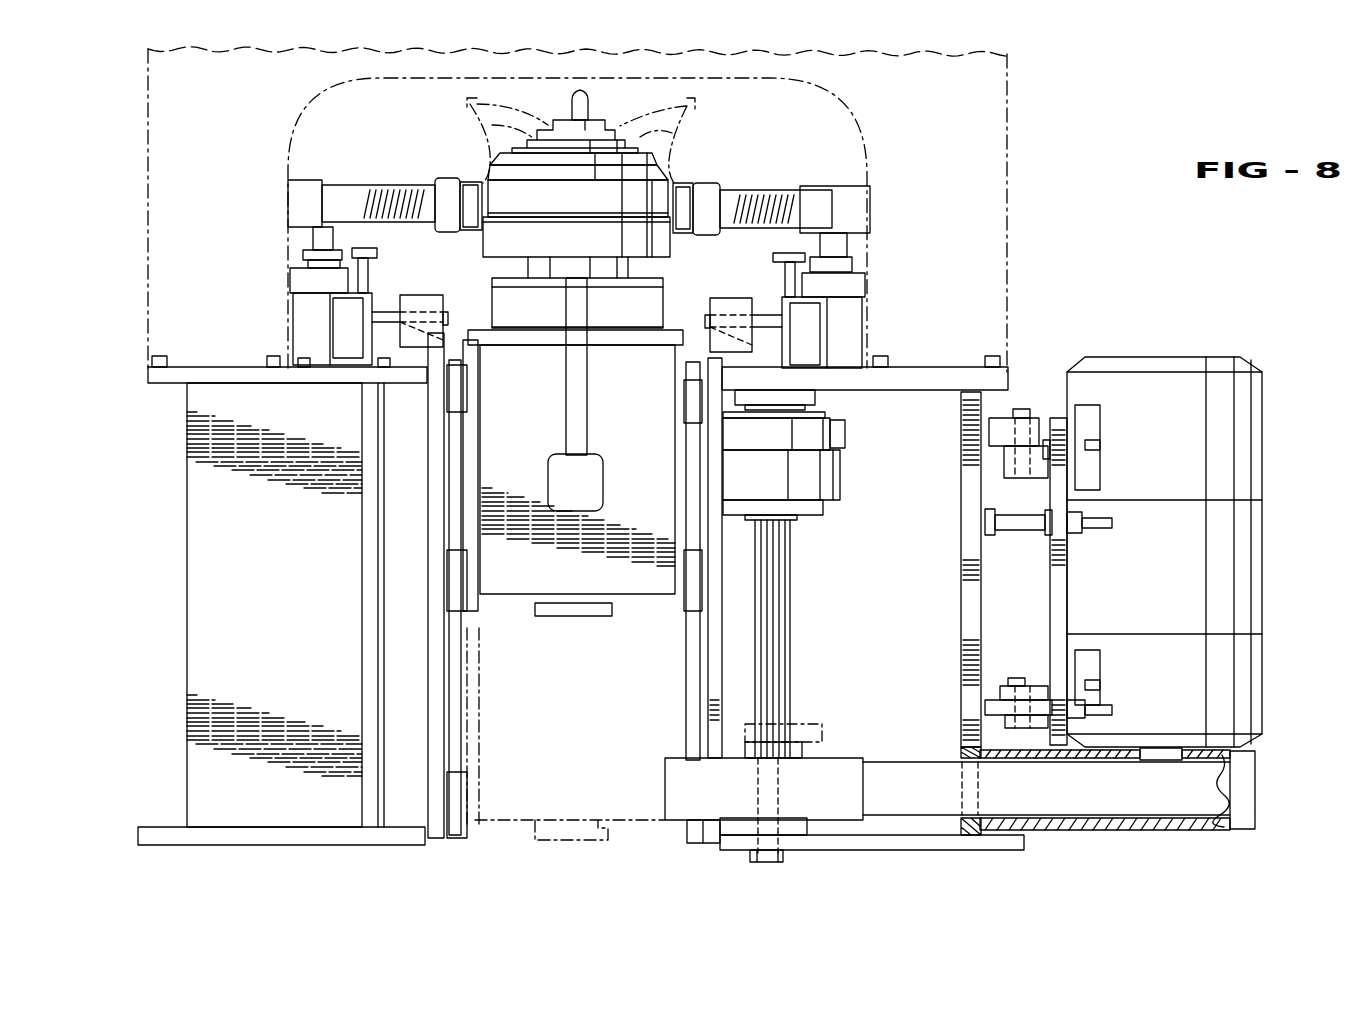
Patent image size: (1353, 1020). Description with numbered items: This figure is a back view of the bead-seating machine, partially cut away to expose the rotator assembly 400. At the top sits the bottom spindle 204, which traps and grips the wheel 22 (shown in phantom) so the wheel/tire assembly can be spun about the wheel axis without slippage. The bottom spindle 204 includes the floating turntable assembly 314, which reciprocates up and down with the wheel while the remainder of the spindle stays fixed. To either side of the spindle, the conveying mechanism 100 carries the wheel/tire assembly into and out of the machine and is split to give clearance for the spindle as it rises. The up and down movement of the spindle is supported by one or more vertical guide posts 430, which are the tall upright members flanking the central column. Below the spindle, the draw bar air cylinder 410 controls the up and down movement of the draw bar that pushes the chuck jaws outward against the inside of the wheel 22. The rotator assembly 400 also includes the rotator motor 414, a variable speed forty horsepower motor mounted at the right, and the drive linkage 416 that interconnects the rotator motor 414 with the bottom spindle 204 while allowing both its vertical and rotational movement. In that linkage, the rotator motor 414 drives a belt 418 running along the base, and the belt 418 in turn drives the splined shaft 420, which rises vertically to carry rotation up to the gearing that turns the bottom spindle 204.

The wheel 22 is at (700, 138).
The conveying mechanism 100 is at (400, 324).
The bottom spindle 204 is at (590, 110).
The floating turntable assembly 314 is at (490, 168).
The rotator assembly 400 is at (763, 574).
The draw bar air cylinder 410 is at (558, 614).
The rotator motor 414 is at (1123, 552).
The drive linkage 416 is at (752, 625).
The belt 418 is at (888, 797).
The splined shaft 420 is at (790, 534).
The vertical guide posts 430 is at (430, 668).